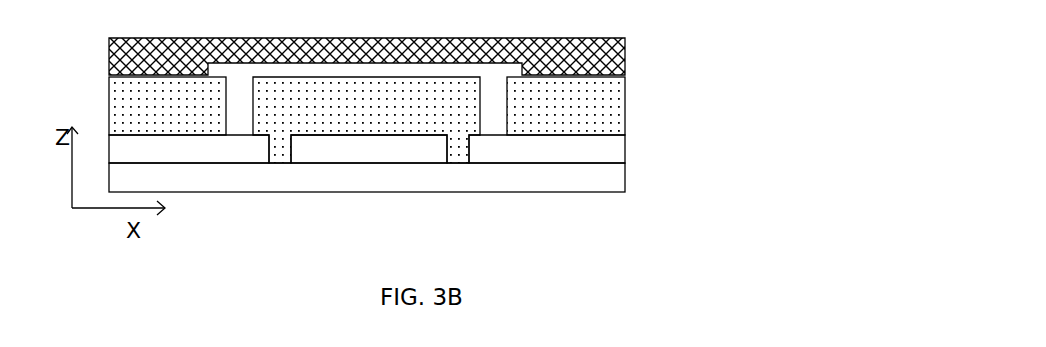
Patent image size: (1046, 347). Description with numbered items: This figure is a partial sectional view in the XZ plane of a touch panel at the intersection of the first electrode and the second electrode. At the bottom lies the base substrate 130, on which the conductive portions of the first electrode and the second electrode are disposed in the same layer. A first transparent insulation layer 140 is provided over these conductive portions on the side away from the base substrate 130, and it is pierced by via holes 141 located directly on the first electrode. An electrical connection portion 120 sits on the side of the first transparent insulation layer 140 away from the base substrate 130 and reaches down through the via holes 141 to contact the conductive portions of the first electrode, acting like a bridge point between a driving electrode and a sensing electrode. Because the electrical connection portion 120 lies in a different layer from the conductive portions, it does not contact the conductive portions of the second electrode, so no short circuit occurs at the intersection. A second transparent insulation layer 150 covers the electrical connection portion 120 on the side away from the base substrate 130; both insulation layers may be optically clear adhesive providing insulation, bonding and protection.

The second transparent insulation layer 150 is at (592, 57).
The electrical connection portion 120 is at (433, 68).
The first transparent insulation layer 140 is at (382, 120).
The via hole 141 is at (222, 108).
The base substrate 130 is at (592, 173).